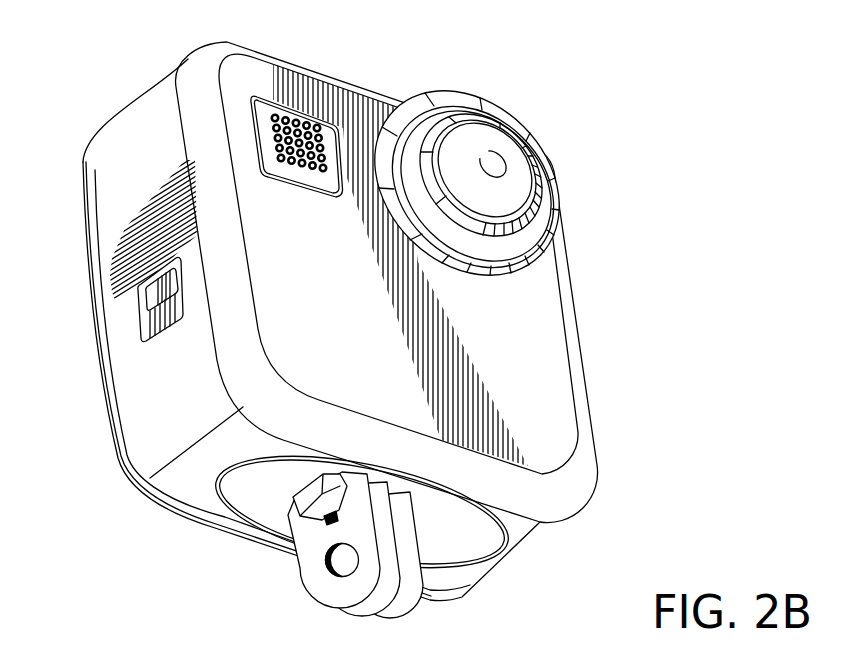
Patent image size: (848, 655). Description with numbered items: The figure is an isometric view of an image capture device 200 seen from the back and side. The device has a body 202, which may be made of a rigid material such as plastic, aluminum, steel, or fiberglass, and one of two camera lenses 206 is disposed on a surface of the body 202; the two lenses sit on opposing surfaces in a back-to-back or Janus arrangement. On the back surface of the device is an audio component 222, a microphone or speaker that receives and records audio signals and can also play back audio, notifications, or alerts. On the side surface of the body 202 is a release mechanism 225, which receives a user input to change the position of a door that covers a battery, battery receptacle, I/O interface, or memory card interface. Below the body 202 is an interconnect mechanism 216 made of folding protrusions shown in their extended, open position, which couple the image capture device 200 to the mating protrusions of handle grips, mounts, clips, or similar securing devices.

The image capture device 200 is at (370, 317).
The body 202 is at (577, 325).
The camera lens 206 is at (494, 167).
The interconnect mechanism 216 is at (315, 553).
The audio component 222 is at (275, 117).
The release mechanism 225 is at (137, 300).